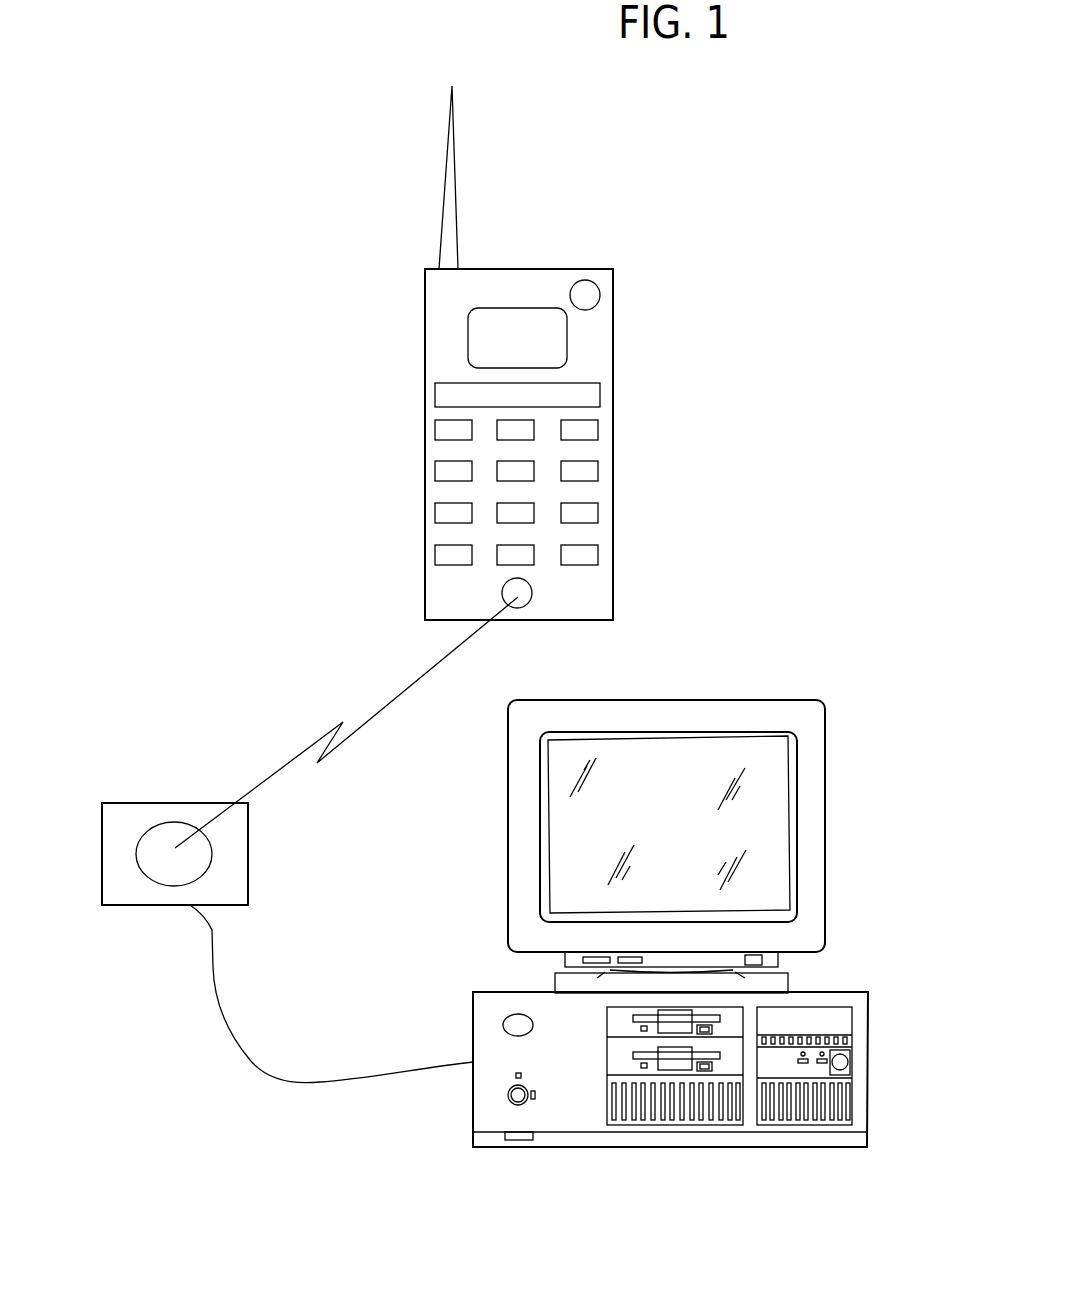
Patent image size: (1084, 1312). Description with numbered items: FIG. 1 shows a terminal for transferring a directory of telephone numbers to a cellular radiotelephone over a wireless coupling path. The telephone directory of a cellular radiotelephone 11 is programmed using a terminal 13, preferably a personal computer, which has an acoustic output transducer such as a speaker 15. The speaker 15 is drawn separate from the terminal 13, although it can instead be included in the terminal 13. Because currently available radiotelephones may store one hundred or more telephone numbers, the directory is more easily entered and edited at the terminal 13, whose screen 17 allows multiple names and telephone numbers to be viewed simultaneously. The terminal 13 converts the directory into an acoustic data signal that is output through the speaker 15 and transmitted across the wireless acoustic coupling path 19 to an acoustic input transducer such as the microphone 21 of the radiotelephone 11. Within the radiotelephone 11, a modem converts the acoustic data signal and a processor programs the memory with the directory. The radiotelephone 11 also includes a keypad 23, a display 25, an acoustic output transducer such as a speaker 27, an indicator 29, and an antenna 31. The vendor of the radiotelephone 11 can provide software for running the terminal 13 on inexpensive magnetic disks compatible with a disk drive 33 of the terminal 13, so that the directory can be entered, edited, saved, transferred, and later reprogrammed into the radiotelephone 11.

The cellular radiotelephone 11 is at (648, 198).
The terminal 13 is at (582, 889).
The speaker 15 is at (112, 802).
The screen 17 is at (680, 765).
The wireless acoustic coupling path 19 is at (302, 748).
The microphone 21 is at (502, 593).
The keypad 23 is at (598, 467).
The display 25 is at (435, 390).
The speaker 27 is at (468, 323).
The indicator 29 is at (598, 287).
The antenna 31 is at (447, 150).
The disk drive 33 is at (607, 1022).